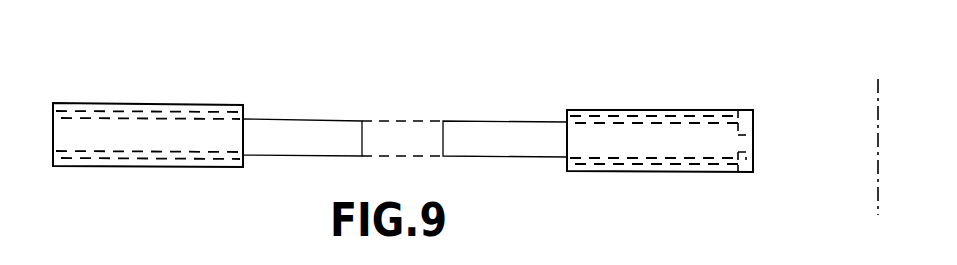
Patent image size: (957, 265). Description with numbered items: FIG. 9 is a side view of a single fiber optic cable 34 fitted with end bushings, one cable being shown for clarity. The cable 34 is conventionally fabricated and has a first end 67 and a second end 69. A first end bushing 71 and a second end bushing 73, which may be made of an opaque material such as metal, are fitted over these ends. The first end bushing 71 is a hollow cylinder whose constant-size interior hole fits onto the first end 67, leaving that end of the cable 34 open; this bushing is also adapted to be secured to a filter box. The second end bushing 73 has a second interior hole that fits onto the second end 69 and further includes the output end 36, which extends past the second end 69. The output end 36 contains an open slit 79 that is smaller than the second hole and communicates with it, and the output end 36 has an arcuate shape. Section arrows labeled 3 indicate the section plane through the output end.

The first end bushing 71 is at (84, 103).
The first end 67 is at (48, 153).
The cable 34 is at (306, 120).
The second end bushing 73 is at (680, 172).
The second end 69 is at (737, 110).
The open slit 79 is at (749, 148).
The output end 36 is at (750, 172).
The section line 3- 3 is at (878, 79).